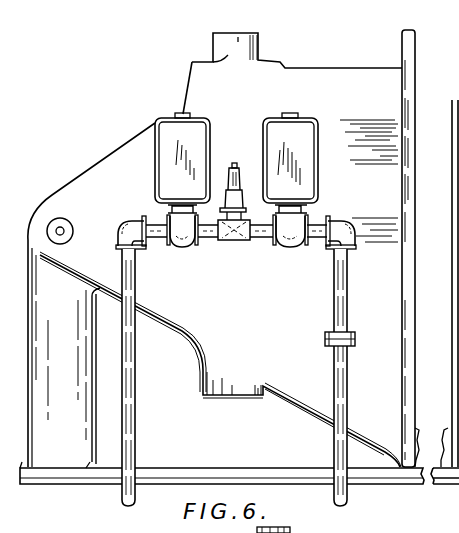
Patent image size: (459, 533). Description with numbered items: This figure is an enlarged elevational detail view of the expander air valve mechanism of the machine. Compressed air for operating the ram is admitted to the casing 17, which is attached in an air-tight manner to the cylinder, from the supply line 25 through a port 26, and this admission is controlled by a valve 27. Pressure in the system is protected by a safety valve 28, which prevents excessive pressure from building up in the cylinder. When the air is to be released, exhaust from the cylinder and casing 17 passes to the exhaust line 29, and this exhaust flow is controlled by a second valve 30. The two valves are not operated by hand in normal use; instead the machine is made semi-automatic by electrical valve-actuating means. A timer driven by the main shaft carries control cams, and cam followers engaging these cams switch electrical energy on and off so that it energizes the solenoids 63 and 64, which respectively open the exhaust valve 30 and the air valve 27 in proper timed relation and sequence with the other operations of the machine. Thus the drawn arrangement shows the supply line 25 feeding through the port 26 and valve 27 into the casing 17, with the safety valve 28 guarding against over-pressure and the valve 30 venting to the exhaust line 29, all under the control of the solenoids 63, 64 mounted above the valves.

The casing 17 is at (177, 335).
The supply line 25 is at (333, 302).
The port 26 is at (227, 245).
The valve 27 is at (293, 246).
The safety valve 28 is at (235, 163).
The exhaust line 29 is at (136, 447).
The valve 30 is at (177, 246).
The solenoid 63 is at (167, 135).
The solenoid 64 is at (308, 135).